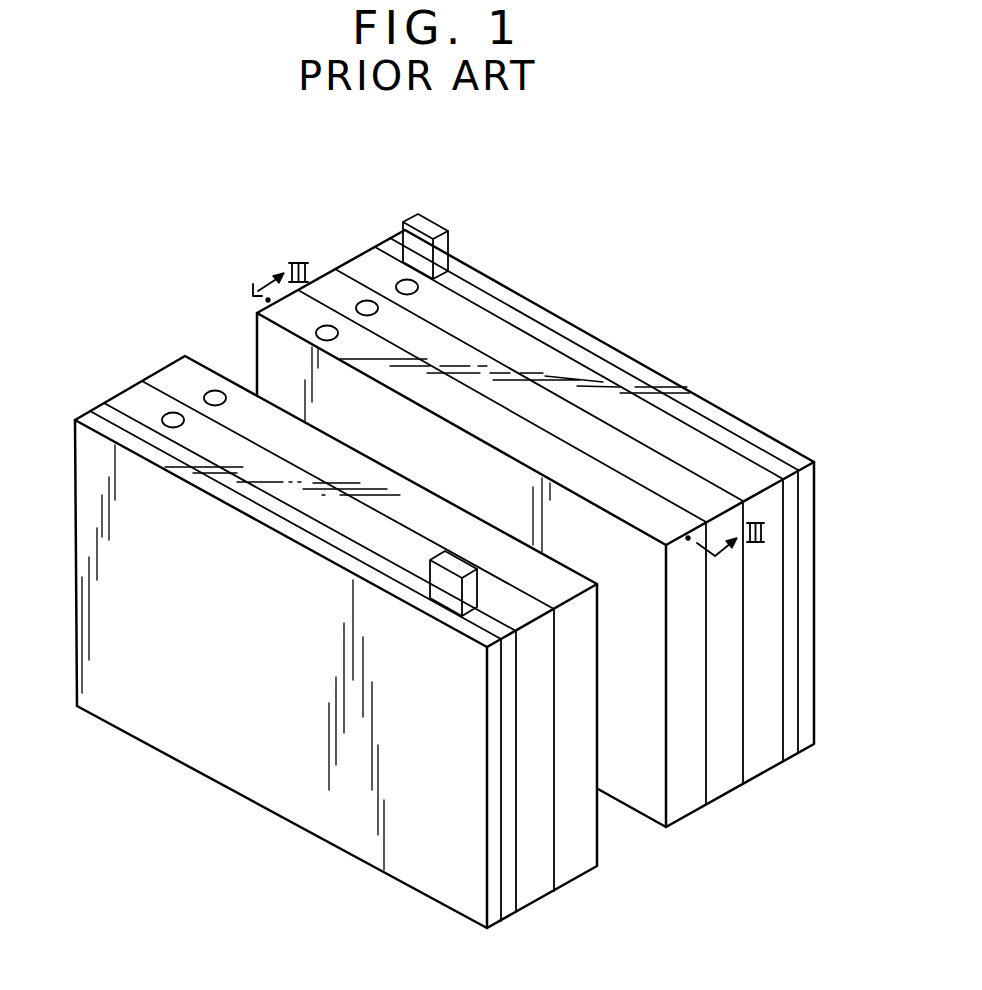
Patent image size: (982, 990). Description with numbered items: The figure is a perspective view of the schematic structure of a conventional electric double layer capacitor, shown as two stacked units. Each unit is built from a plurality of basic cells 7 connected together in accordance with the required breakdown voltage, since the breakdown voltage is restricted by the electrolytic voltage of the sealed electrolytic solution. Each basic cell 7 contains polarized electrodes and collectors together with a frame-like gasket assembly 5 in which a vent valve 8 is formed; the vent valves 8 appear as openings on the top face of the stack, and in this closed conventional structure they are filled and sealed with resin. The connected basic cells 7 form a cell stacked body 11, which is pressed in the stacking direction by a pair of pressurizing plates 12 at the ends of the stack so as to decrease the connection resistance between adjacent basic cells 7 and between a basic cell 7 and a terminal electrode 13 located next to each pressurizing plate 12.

The gasket assembly 5 is at (760, 763).
The basic cell 7 is at (711, 817).
The vent valve 8 is at (378, 312).
The cell stacked body 11 is at (349, 224).
The pressurizing plate 12 is at (810, 747).
The terminal electrode 13 is at (792, 753).